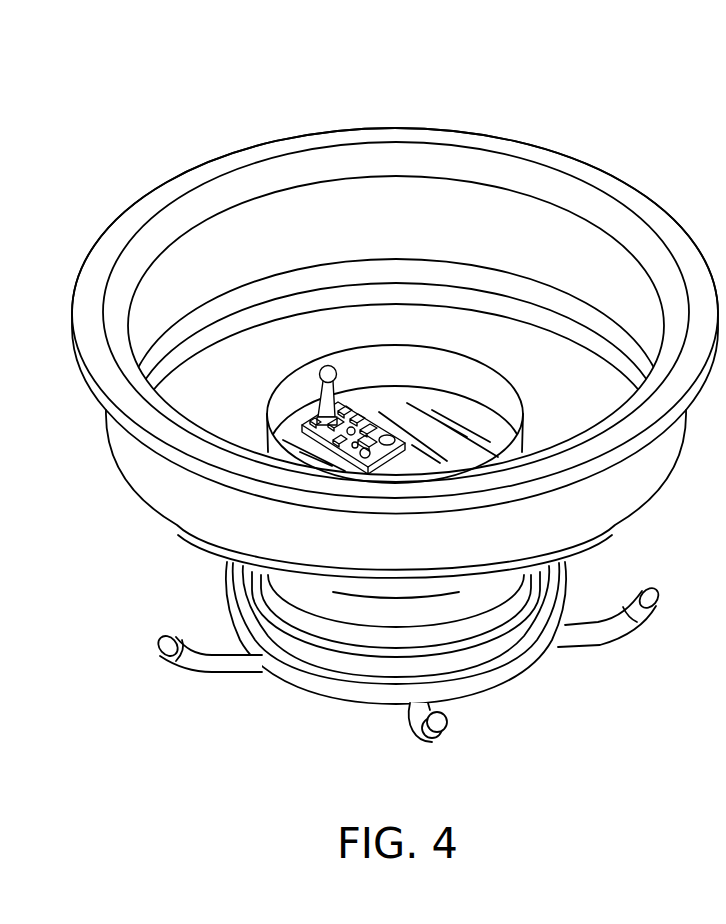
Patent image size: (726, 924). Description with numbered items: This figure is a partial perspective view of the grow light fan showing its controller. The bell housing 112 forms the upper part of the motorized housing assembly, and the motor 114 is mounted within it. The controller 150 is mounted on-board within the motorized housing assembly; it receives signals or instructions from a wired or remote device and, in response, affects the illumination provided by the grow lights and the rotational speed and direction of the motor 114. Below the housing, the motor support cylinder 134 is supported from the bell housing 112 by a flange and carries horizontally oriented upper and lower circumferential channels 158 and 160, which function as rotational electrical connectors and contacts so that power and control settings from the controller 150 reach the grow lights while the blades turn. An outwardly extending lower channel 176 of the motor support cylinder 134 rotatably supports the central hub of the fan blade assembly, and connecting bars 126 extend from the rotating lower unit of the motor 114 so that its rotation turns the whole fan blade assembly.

The bell housing 112 is at (412, 128).
The motor support cylinder 134 is at (515, 665).
The motor 114 is at (478, 423).
The controller 150 is at (318, 446).
The lower channel 176 is at (225, 568).
The connecting bars 126 is at (210, 668).
The lower circumferential channel 160 is at (350, 637).
The upper circumferential channel 158 is at (397, 596).